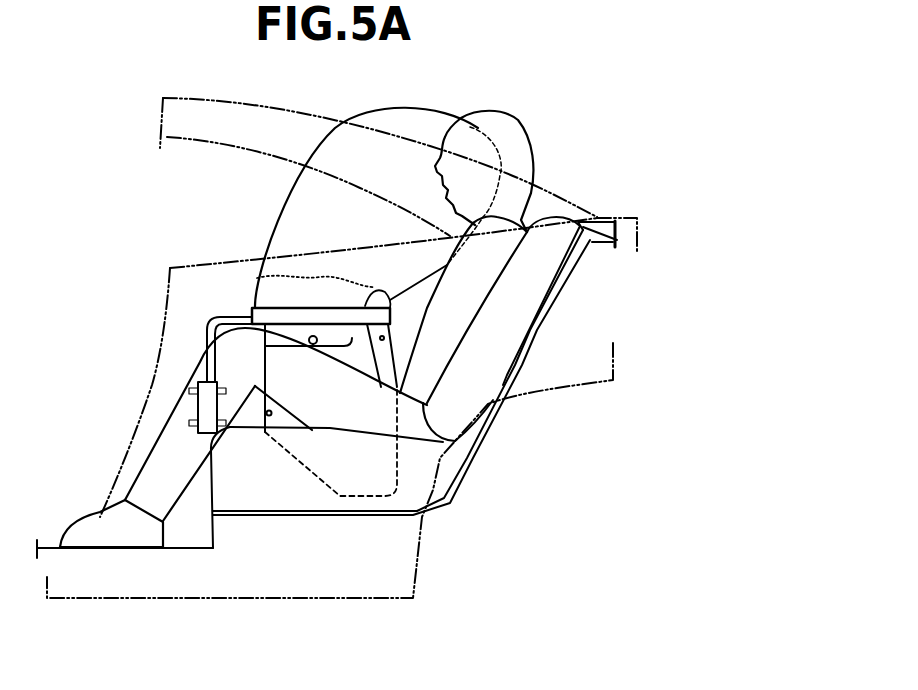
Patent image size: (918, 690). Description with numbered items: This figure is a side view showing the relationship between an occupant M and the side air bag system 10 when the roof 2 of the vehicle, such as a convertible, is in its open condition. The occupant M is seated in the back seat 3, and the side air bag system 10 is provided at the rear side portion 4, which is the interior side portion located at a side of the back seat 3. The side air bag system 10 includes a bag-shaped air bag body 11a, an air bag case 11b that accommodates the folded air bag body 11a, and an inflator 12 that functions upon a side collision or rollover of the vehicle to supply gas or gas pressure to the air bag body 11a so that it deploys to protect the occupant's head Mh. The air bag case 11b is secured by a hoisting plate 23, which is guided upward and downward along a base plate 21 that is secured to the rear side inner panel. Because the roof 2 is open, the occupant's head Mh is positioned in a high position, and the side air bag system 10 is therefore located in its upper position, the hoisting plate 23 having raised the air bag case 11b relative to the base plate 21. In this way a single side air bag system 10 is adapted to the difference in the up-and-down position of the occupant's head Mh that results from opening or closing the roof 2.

The roof 2 is at (287, 107).
The back seat 3 is at (432, 470).
The rear side portion 4 is at (240, 278).
The side air bag system 10 is at (218, 306).
The air bag body 11a is at (306, 189).
The air bag case 11b is at (358, 315).
The inflator 12 is at (203, 408).
The base plate 21 is at (340, 486).
The hoisting plate 23 is at (338, 346).
The occupant M is at (480, 277).
The occupant's head Mh is at (520, 148).